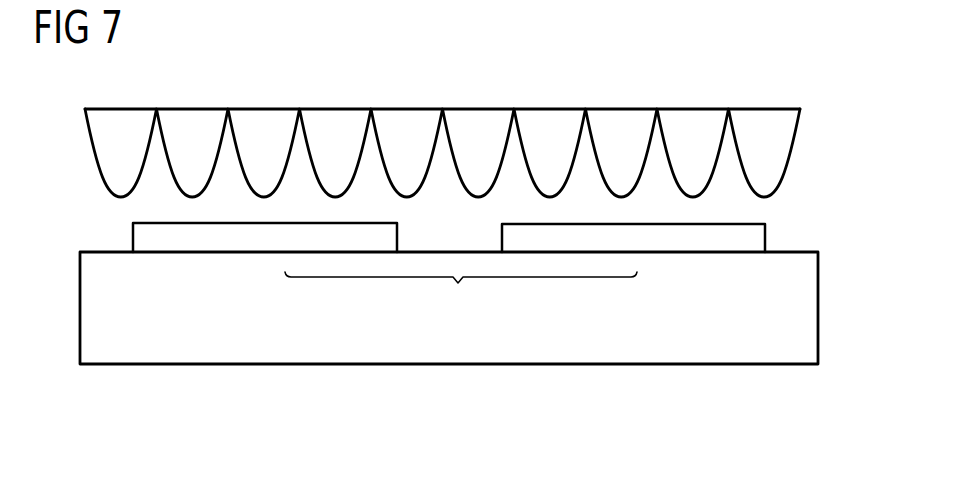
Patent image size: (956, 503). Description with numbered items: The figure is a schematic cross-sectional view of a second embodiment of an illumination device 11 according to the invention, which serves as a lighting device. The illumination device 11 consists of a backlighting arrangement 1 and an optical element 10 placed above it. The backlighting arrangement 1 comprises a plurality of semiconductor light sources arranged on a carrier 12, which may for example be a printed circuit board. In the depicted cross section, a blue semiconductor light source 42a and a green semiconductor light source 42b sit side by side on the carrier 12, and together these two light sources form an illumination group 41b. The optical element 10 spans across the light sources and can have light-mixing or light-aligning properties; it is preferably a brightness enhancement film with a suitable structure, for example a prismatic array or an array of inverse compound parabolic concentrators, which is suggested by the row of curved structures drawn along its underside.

The backlighting arrangement 1 is at (63, 221).
The optical element 10 is at (63, 102).
The illumination device 11 is at (799, 103).
The carrier 12 is at (808, 318).
The illumination group 41b is at (461, 298).
The blue semiconductor light source 42a is at (388, 236).
The green semiconductor light source 42b is at (753, 237).